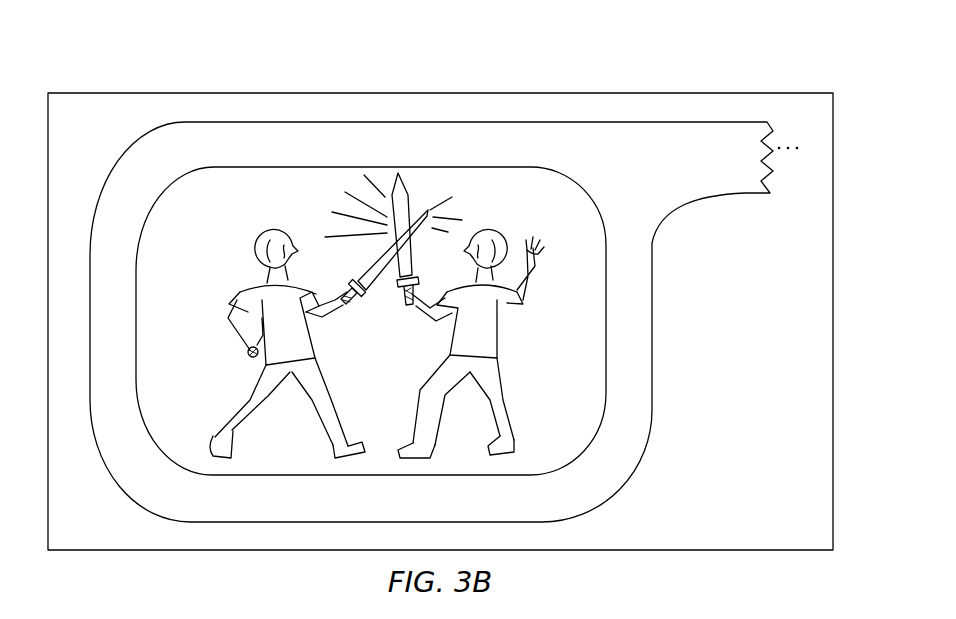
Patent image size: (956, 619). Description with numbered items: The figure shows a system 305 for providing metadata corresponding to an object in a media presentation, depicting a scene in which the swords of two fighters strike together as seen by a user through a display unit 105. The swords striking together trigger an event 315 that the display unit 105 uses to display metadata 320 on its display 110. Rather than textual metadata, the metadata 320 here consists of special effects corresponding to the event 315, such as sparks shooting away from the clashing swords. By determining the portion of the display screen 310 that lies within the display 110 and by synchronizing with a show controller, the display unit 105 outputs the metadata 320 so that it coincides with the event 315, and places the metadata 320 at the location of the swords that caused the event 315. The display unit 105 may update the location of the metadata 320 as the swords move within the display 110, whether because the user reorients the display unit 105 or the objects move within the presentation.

The system 305 is at (696, 80).
The display screen 310 is at (425, 93).
The display unit 105 is at (653, 335).
The display 110 is at (578, 194).
The event 315 is at (417, 208).
The metadata 320 is at (350, 214).